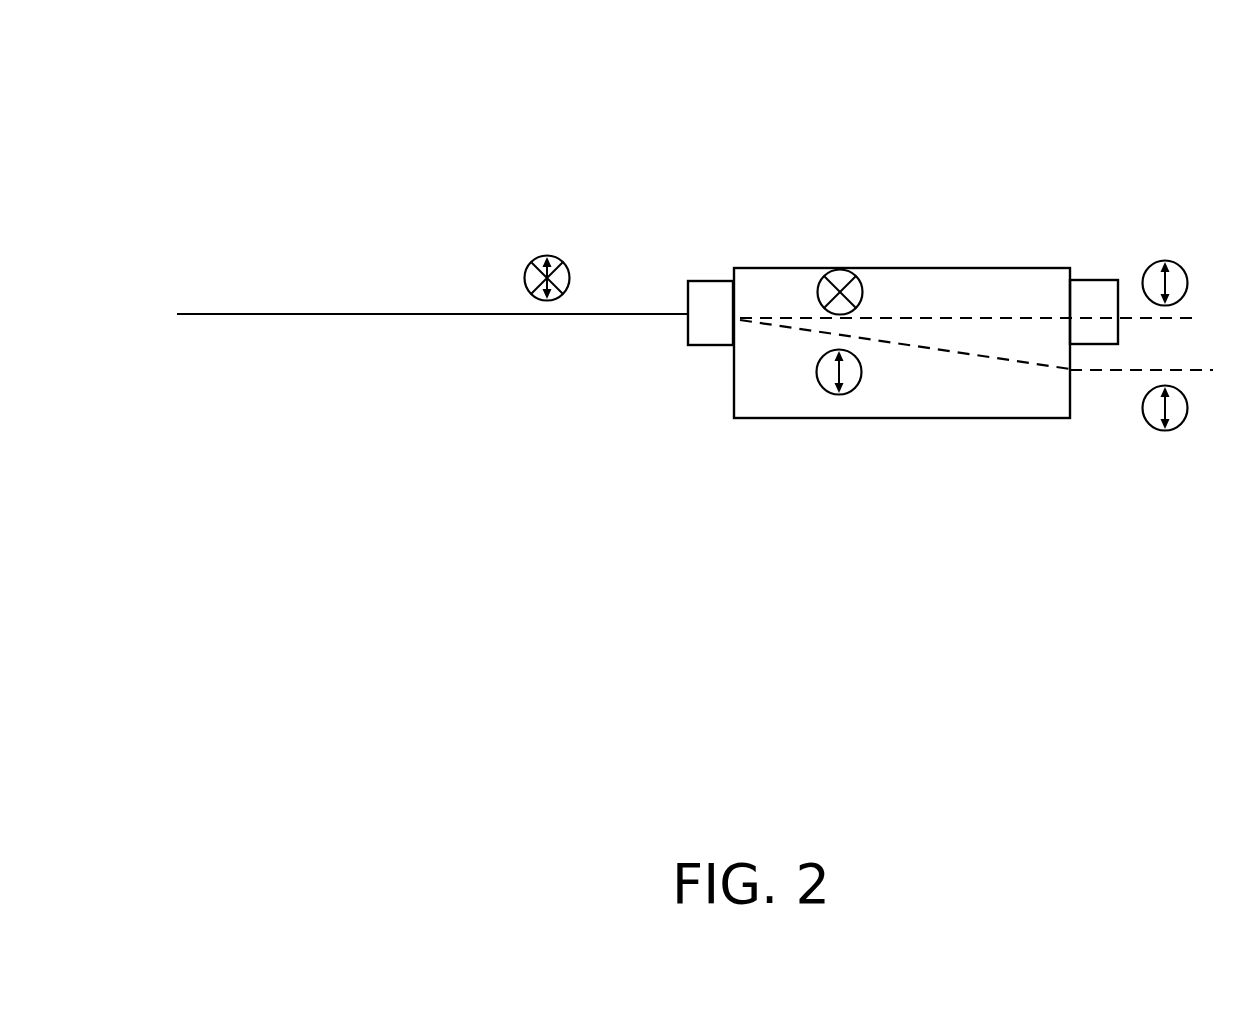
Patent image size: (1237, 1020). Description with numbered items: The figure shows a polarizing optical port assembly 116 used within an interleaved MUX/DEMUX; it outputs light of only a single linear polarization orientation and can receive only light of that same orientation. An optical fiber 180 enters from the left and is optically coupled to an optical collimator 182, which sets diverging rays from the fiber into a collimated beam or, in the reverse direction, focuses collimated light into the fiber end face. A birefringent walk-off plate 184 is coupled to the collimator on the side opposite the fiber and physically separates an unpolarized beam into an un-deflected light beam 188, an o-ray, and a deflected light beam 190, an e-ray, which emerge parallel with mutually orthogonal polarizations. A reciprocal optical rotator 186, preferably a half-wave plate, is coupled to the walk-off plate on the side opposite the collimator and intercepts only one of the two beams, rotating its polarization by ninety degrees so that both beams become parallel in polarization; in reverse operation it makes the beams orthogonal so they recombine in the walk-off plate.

The optical port assembly 116 is at (692, 75).
The optical fiber 180 is at (305, 310).
The optical collimator 182 is at (712, 280).
The birefringent walk-off plate 184 is at (857, 268).
The reciprocal optical rotator 186 is at (1088, 280).
The un-deflected light beam 188 is at (965, 317).
The deflected light beam 190 is at (980, 357).